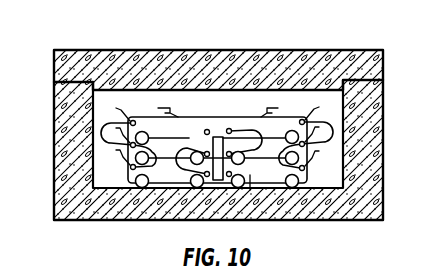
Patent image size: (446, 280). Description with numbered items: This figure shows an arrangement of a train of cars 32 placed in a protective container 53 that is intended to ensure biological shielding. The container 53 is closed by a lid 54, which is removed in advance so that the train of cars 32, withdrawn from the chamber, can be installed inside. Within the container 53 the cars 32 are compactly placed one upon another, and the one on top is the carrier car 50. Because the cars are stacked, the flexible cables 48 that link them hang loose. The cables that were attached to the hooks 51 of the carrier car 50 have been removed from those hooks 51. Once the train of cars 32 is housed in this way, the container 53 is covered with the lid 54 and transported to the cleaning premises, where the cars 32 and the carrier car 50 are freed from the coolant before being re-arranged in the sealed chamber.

The lid 54 is at (283, 54).
The container 53 is at (357, 197).
The train of cars 32 is at (172, 178).
The carrier car 50 is at (205, 130).
The flexible cables 48 is at (238, 126).
The hooks 51 is at (261, 112).